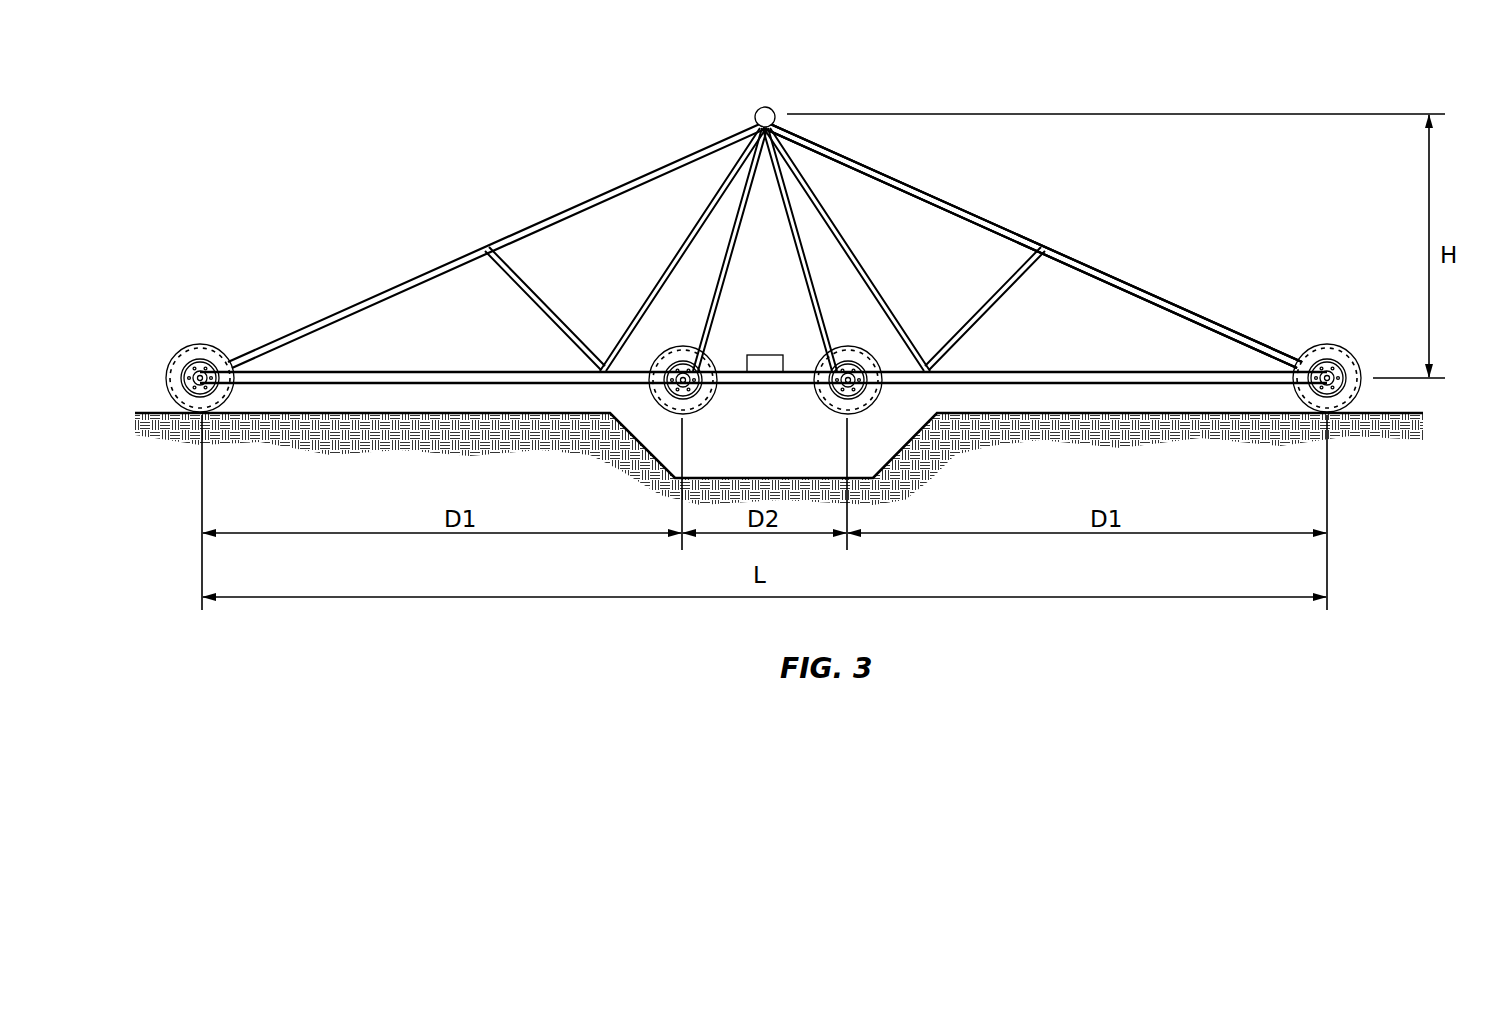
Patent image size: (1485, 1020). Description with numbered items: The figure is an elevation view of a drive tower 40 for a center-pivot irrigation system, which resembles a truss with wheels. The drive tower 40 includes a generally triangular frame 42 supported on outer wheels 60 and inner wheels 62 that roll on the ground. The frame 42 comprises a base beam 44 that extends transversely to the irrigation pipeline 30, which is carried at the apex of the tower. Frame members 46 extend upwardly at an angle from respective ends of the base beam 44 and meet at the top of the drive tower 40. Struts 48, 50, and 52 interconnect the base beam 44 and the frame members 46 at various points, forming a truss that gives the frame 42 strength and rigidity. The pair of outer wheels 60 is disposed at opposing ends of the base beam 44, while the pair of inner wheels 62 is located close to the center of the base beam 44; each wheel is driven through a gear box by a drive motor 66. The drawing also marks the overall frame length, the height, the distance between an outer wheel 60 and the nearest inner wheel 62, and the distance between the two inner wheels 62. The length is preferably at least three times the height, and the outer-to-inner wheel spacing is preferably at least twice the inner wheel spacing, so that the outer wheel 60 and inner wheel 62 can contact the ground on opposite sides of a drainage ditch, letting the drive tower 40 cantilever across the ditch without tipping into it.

The irrigation pipeline 30 is at (772, 108).
The drive tower 40 is at (1017, 77).
The frame 42 is at (1180, 298).
The base beam 44 is at (1120, 372).
The frame members 46 is at (925, 185).
The struts 48 is at (538, 313).
The struts 50 is at (672, 253).
The struts 52 is at (810, 272).
The outer wheels 60 is at (190, 358).
The inner wheels 62 is at (695, 405).
The drive motor 66 is at (763, 368).